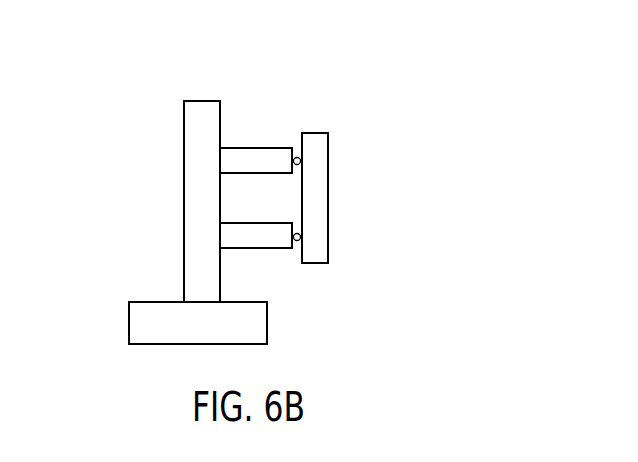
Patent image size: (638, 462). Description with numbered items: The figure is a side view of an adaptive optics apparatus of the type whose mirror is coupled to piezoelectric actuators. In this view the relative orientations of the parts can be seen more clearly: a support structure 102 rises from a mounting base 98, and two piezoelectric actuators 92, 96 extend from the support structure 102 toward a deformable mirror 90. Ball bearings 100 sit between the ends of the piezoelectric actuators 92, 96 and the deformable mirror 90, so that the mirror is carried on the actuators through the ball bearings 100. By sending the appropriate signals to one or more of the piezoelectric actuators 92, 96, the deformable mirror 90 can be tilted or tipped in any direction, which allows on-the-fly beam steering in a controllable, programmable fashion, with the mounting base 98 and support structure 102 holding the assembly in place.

The deformable mirror 90 is at (328, 198).
The piezoelectric actuator 92 is at (255, 147).
The piezoelectric actuator 96 is at (257, 248).
The mounting base 98 is at (158, 300).
The ball bearings 100 is at (295, 156).
The support structure 102 is at (202, 98).